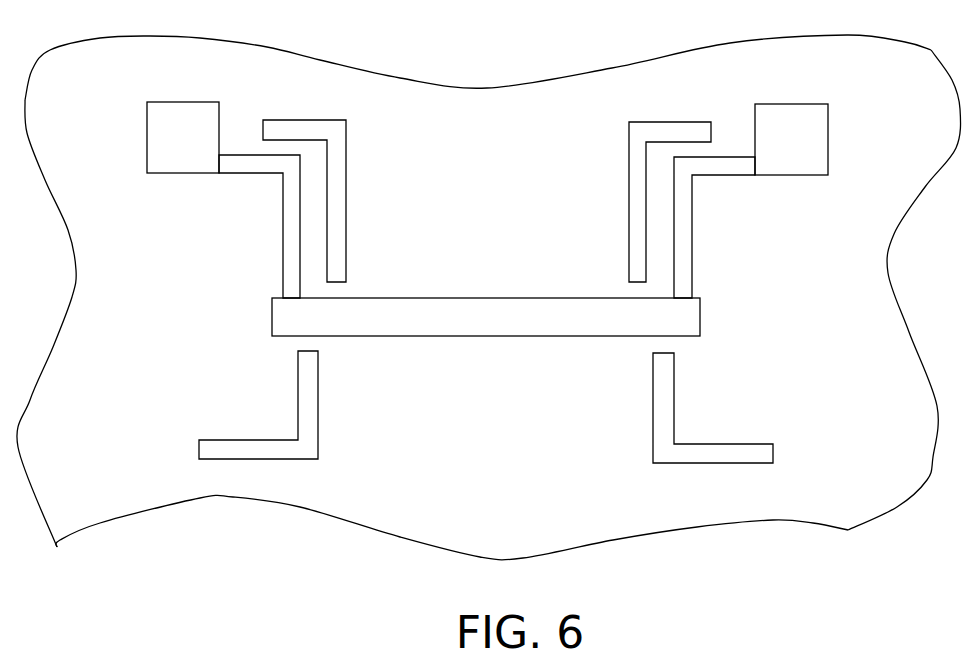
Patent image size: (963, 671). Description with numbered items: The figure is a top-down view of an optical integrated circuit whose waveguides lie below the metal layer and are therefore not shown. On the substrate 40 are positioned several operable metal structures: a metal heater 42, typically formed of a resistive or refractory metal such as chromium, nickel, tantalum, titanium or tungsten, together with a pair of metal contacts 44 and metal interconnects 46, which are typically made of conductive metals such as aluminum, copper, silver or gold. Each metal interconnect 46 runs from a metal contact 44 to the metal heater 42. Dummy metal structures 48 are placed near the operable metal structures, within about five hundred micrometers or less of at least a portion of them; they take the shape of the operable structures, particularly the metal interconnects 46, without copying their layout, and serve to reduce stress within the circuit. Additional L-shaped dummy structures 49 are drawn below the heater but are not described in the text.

The substrate 40 is at (875, 506).
The metal heater 42 is at (534, 311).
The metal contact 44 is at (487, 135).
The metal interconnect 46 is at (486, 226).
The dummy metal structure 48 is at (487, 201).
The L-shaped conductive element 49 is at (486, 407).